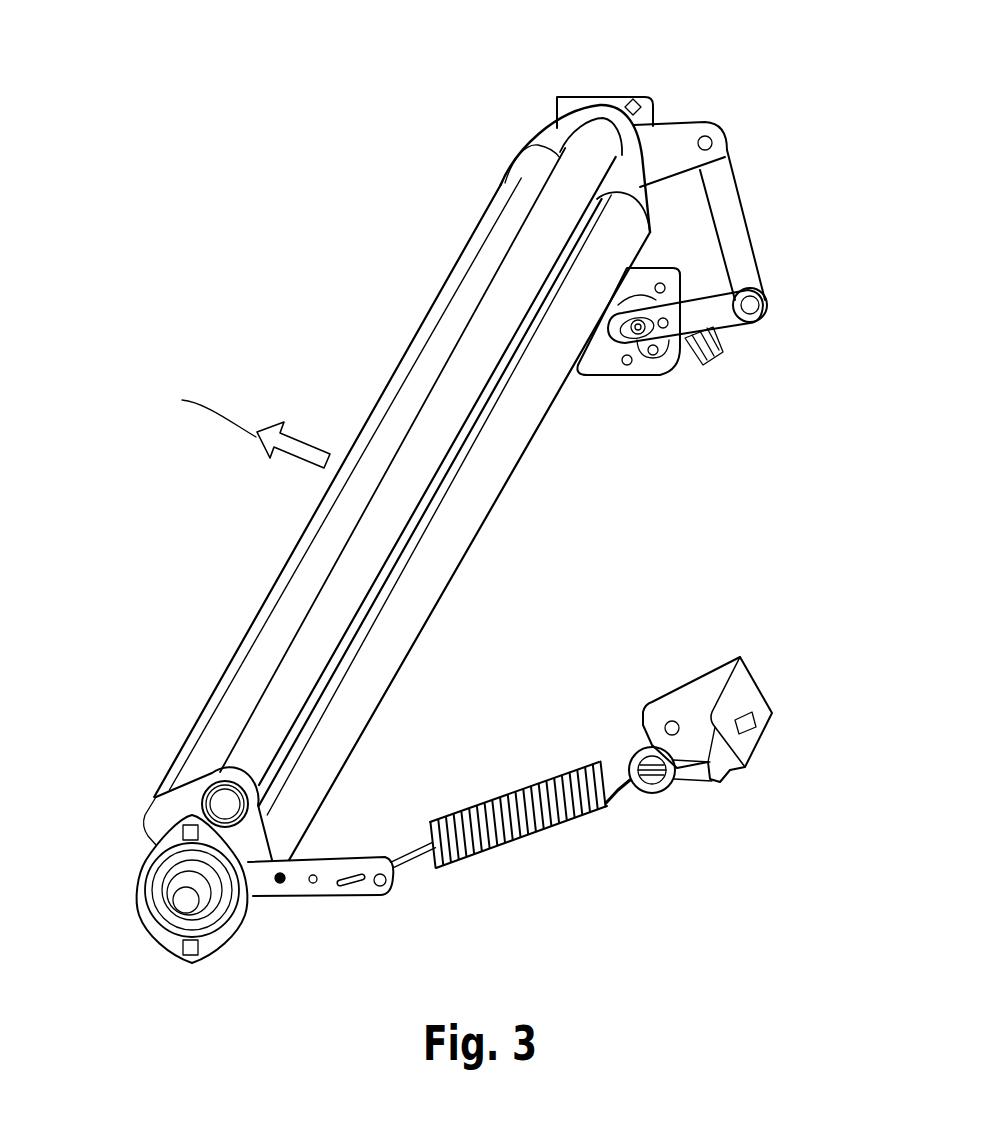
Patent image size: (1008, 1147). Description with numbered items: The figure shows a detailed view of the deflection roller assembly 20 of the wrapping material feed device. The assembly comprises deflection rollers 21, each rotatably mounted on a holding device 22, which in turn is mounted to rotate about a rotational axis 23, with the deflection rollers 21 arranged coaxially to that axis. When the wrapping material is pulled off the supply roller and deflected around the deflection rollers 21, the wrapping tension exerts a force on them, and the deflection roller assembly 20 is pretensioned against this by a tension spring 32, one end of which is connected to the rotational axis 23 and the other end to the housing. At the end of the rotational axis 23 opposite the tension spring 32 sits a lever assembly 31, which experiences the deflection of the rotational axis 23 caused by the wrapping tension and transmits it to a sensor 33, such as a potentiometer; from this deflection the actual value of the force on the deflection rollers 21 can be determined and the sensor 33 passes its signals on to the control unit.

The deflection roller assembly 20 is at (306, 370).
The deflection rollers 21 is at (588, 164).
The holding device 22 is at (553, 143).
The rotational axis 23 is at (186, 903).
The lever assembly 31 is at (785, 234).
The tension spring 32 is at (553, 827).
The sensor 33 is at (718, 342).